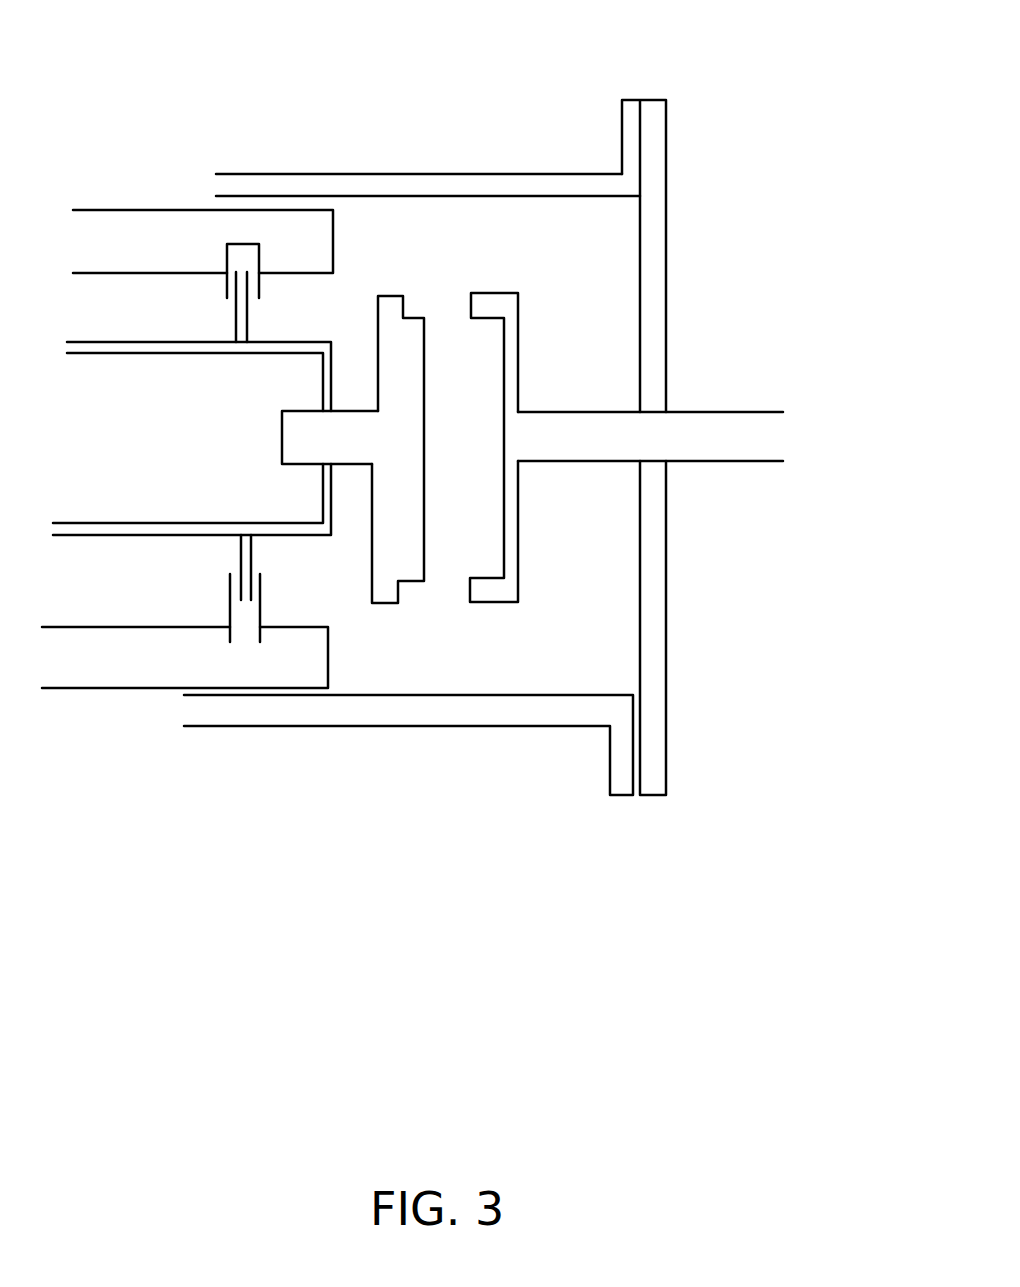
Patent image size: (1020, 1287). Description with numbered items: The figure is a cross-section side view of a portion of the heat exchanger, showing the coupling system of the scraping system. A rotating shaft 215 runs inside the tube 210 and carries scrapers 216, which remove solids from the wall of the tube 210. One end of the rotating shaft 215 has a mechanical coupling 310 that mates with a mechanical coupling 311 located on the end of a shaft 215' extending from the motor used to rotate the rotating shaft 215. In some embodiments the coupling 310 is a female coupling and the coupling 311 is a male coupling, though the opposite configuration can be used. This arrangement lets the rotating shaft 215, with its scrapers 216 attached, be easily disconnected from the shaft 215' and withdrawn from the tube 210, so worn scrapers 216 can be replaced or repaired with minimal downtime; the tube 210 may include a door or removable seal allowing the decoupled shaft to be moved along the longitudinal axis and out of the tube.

The tube 210 is at (417, 174).
The scrapers 216 is at (114, 240).
The rotating shaft 215 is at (215, 595).
The shaft extending from motor 215' is at (714, 460).
The mechanical coupling 310 is at (400, 593).
The mechanical coupling 311 is at (517, 342).